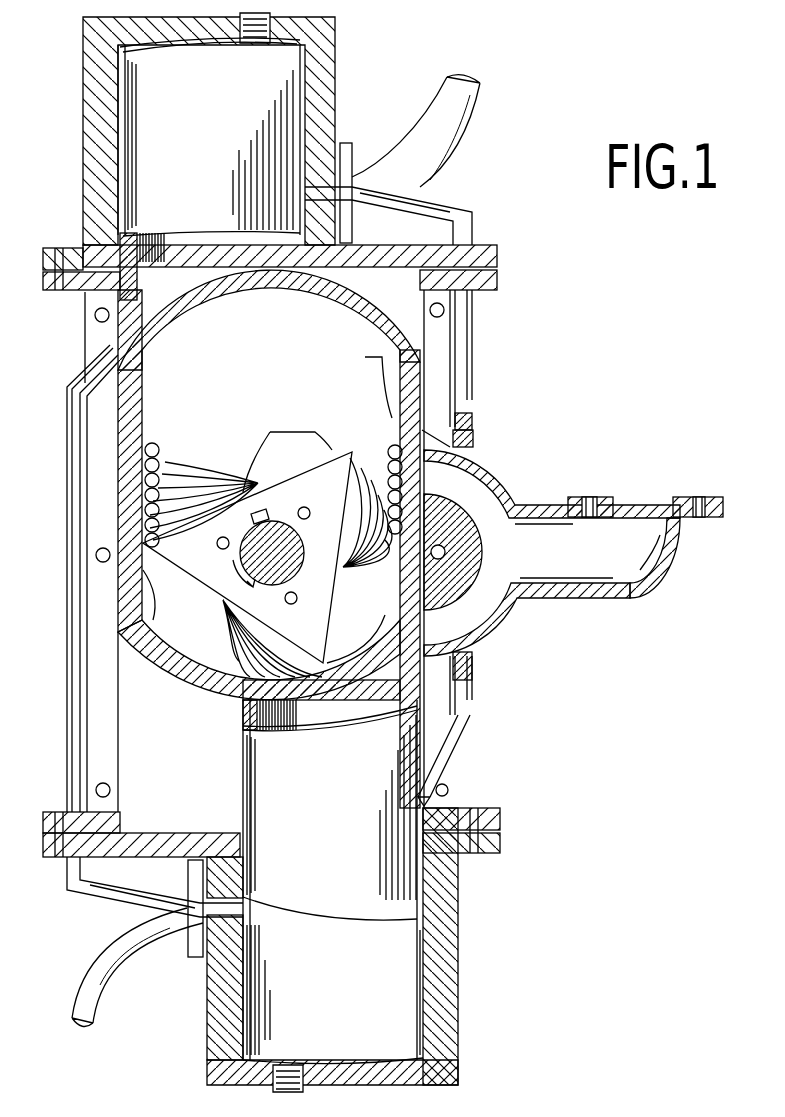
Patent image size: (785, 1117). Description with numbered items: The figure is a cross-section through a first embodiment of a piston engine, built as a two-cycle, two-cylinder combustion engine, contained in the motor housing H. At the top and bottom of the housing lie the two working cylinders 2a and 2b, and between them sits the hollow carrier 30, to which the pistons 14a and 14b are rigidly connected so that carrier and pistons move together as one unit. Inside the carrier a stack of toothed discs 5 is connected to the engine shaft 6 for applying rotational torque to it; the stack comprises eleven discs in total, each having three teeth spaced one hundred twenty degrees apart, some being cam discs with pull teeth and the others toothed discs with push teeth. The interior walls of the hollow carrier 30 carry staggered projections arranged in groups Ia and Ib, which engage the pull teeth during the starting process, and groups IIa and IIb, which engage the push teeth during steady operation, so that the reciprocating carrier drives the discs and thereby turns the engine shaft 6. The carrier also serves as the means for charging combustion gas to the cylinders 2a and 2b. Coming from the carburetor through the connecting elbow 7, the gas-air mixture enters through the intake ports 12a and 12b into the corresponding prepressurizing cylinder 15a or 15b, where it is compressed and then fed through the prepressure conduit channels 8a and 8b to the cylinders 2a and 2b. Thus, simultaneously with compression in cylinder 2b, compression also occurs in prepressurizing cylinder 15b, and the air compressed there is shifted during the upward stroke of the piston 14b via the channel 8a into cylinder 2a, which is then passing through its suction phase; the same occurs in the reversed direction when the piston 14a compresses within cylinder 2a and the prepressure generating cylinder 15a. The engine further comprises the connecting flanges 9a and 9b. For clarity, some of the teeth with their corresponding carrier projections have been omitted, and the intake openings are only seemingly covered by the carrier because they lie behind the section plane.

The piston 14a is at (132, 118).
The piston 14b is at (403, 888).
The connecting flange 9a is at (348, 162).
The connecting flange 9b is at (193, 933).
The prepressure conduit channel 8a is at (447, 208).
The prepressure conduit channel 8b is at (100, 893).
The cylinder 2a is at (357, 257).
The cylinder 2b is at (178, 847).
The prepressurizing cylinder 15a is at (414, 298).
The prepressurizing cylinder 15b is at (197, 782).
The hollow carrier 30 is at (250, 286).
The group of staggered projections Ia is at (160, 607).
The group of staggered projections Ib is at (377, 375).
The group of staggered projections IIa is at (157, 480).
The group of staggered projections IIb is at (387, 506).
The motor housing H is at (98, 477).
The engine shaft 6 is at (297, 519).
The stack of toothed discs 5 is at (335, 570).
The intake port 12a is at (468, 451).
The intake port 12b is at (480, 651).
The connecting elbow 7 is at (665, 578).